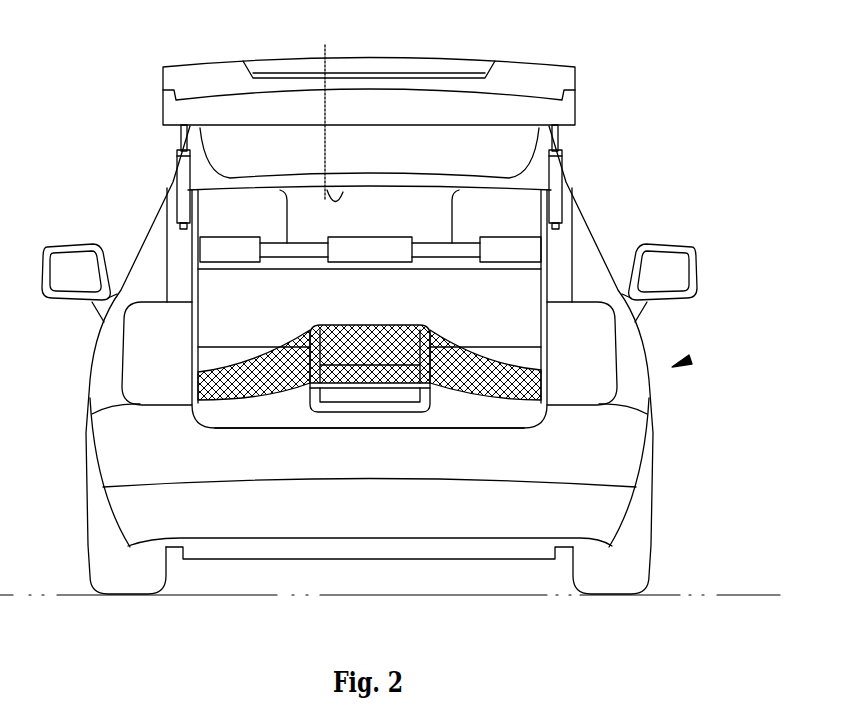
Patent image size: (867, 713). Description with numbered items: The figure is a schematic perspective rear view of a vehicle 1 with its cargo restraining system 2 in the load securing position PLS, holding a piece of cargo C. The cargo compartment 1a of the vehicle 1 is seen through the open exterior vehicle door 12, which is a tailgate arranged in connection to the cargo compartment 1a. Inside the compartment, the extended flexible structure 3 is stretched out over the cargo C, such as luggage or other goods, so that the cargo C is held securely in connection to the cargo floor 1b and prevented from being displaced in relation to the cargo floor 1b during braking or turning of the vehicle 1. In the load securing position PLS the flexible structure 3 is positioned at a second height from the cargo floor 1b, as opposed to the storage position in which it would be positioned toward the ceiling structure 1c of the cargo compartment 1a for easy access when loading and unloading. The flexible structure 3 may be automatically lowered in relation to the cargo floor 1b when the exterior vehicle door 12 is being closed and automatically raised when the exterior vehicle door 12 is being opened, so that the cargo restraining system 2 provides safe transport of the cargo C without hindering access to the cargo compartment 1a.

The vehicle 1 is at (583, 262).
The cargo compartment 1a is at (525, 283).
The cargo floor 1b is at (447, 400).
The ceiling structure 1c is at (324, 45).
The cargo restraining system 2 is at (275, 410).
The extended flexible structure 3 is at (483, 395).
The cargo C is at (362, 395).
The exterior vehicle door 12 is at (210, 84).
The load securing position PLS is at (690, 360).